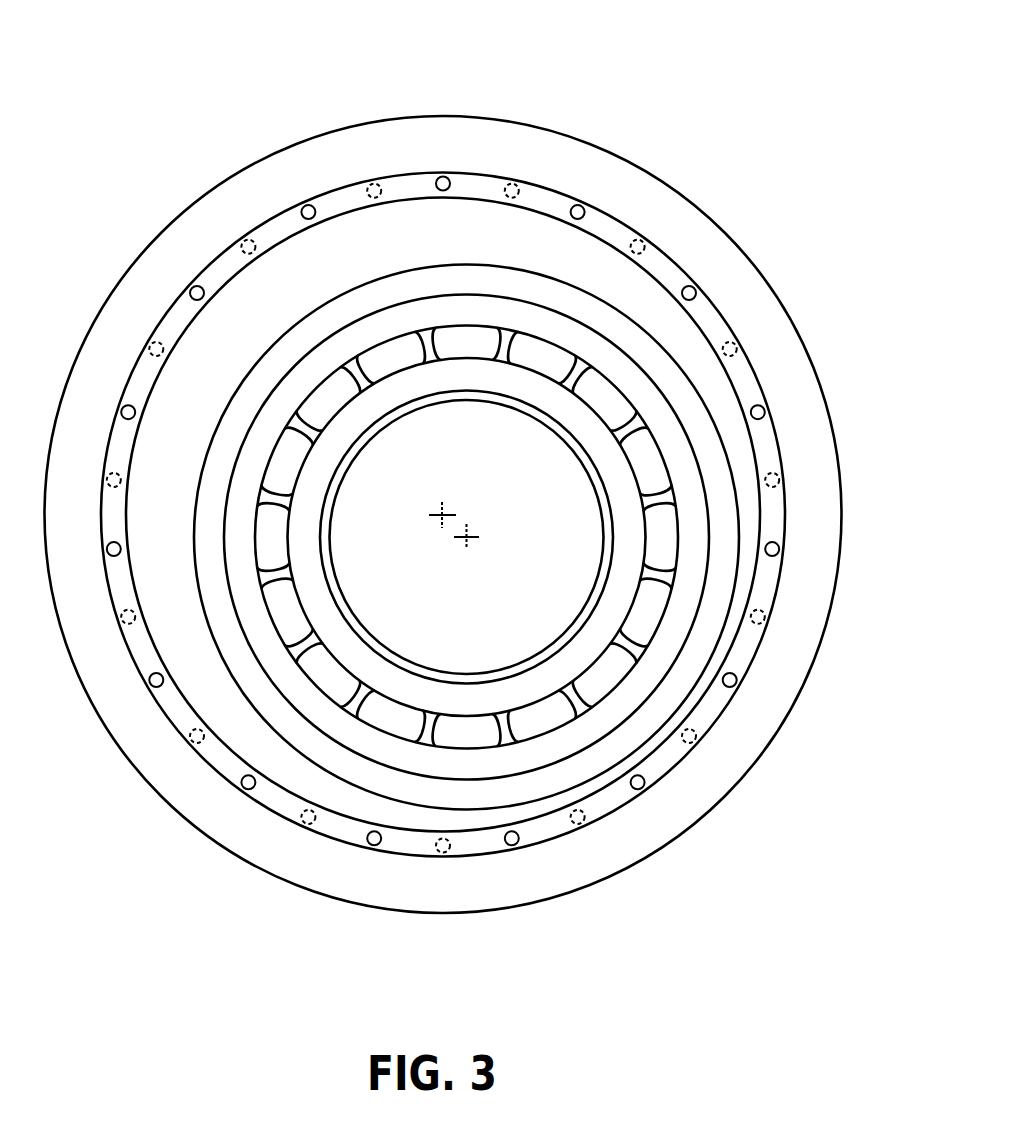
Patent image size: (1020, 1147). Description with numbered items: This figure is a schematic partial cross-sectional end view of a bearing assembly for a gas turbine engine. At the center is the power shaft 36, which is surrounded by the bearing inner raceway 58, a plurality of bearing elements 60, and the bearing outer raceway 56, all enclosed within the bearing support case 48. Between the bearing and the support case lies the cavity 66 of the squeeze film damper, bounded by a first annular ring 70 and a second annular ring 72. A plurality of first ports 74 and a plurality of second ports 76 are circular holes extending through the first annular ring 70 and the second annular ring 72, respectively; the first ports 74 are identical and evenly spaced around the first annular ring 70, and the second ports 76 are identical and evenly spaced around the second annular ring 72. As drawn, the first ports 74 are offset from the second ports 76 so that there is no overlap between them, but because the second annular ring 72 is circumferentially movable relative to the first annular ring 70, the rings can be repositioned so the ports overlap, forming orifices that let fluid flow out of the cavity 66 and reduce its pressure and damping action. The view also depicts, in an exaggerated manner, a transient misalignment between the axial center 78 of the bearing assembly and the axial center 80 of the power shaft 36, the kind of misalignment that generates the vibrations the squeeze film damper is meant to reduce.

The power shaft 36 is at (388, 437).
The bearing support case 48 is at (192, 200).
The bearing outer raceway 56 is at (288, 398).
The bearing inner raceway 58 is at (417, 388).
The bearing elements 60 is at (345, 390).
The cavity 66 is at (475, 222).
The first annular ring 70 is at (673, 278).
The second annular ring 72 is at (630, 225).
The first ports 74 is at (652, 248).
The second ports 76 is at (618, 233).
The axial center of bearing assembly 78 is at (446, 512).
The axial center of power shaft 80 is at (473, 533).